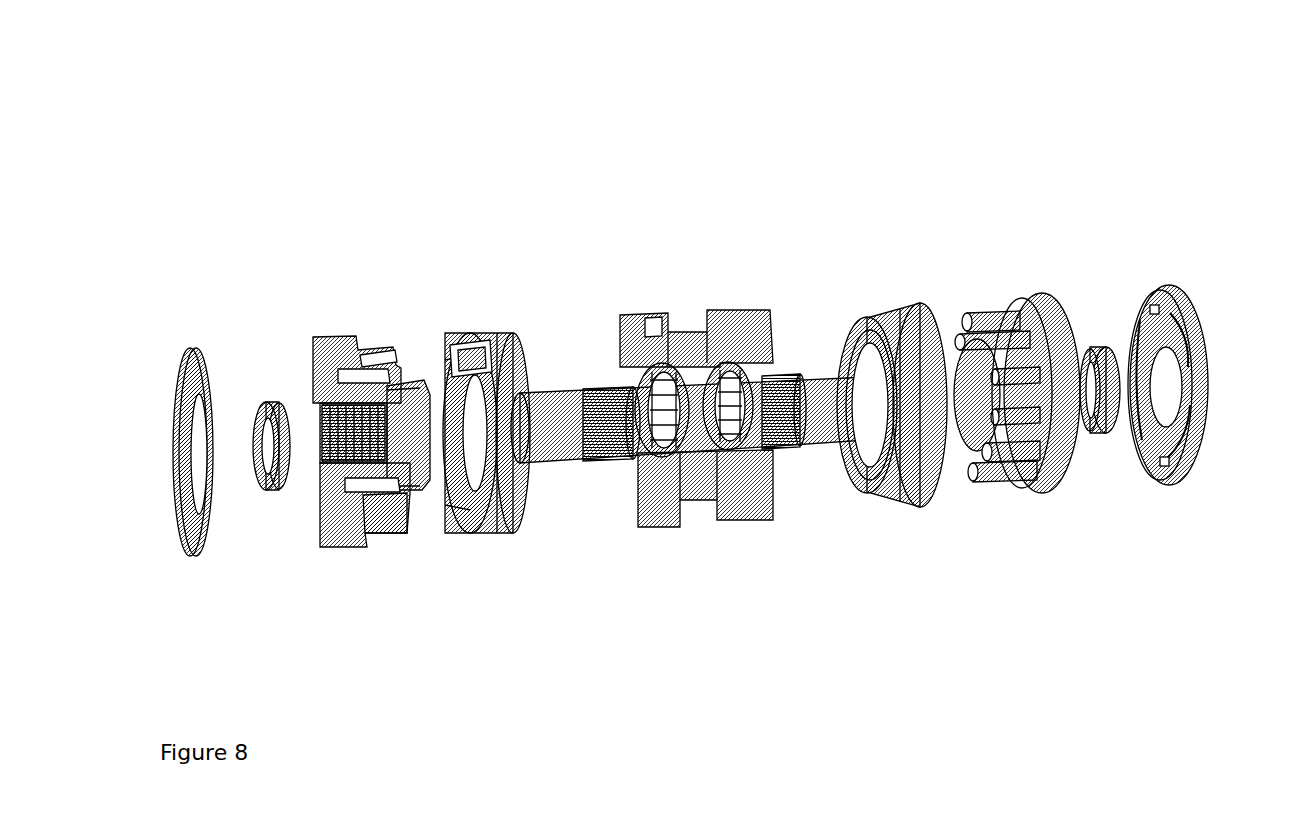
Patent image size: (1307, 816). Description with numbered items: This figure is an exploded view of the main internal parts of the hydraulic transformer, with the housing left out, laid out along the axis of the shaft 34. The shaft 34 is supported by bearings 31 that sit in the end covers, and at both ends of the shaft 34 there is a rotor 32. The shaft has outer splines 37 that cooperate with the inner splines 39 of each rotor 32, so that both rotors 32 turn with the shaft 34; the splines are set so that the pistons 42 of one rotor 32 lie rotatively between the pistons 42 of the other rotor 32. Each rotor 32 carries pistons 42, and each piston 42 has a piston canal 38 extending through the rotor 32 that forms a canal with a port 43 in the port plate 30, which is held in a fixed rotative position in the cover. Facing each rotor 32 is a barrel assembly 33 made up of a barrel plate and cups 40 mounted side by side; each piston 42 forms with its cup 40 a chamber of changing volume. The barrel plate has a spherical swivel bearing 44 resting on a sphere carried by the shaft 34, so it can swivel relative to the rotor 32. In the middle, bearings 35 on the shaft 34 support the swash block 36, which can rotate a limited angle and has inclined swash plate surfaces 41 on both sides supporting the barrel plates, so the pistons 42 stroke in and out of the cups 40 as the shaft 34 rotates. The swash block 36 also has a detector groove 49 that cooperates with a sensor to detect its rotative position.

The port plate 30 is at (175, 322).
The bearings 31 is at (265, 397).
The rotor 32 is at (327, 336).
The barrel assembly 33 is at (478, 343).
The shaft 34 is at (552, 392).
The bearings 35 is at (665, 408).
The swash block 36 is at (687, 324).
The outer splines 37 is at (768, 324).
The piston canal 38 is at (369, 369).
The inner splines 39 is at (400, 417).
The cups 40 is at (470, 357).
The inclined swash plate surfaces 41 is at (783, 362).
The pistons 42 is at (990, 320).
The port 43 is at (1197, 423).
The spherical swivel bearing 44 is at (420, 495).
The detector groove 49 is at (644, 316).